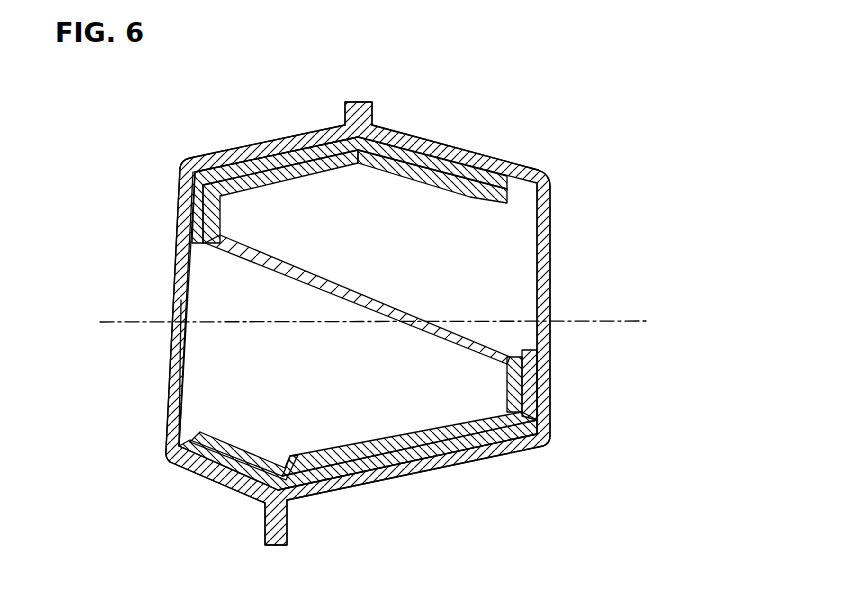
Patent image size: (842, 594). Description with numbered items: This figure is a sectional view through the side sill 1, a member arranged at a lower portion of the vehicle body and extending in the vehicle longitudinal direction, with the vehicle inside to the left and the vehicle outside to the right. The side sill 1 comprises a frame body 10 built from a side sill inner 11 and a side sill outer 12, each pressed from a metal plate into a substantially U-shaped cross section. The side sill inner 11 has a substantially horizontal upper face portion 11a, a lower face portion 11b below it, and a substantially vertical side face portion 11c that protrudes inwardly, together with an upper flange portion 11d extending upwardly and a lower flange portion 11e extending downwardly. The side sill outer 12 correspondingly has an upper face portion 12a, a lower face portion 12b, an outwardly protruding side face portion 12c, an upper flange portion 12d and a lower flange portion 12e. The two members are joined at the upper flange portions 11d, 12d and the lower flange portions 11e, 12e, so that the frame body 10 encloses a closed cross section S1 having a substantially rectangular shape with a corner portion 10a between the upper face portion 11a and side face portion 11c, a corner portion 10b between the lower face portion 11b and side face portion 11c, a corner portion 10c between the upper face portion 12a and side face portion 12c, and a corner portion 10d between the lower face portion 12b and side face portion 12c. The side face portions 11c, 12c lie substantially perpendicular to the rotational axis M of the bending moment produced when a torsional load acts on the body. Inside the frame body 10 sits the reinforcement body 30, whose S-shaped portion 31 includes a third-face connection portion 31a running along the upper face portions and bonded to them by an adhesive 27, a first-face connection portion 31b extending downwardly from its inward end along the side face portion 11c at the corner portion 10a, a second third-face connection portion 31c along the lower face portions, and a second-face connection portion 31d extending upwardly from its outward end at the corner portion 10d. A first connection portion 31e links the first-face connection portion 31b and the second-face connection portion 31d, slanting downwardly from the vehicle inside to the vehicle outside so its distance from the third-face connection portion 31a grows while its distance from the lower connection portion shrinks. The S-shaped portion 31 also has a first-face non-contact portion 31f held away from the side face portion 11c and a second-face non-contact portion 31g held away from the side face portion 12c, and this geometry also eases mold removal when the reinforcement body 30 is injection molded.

The side sill 1 is at (525, 60).
The frame body 10 is at (520, 140).
The corner portion 10a is at (178, 175).
The corner portion 10b is at (167, 463).
The corner portion 10c is at (549, 172).
The corner portion 10d is at (553, 447).
The side sill inner 11 is at (166, 230).
The upper face portion 11a is at (205, 158).
The lower face portion 11b is at (213, 483).
The side face portion 11c is at (168, 410).
The upper flange portion 11d is at (343, 113).
The lower flange portion 11e is at (264, 523).
The side sill outer 12 is at (568, 389).
The upper face portion 12a is at (408, 131).
The lower face portion 12b is at (360, 488).
The side face portion 12c is at (545, 356).
The upper flange portion 12d is at (377, 114).
The lower flange portion 12e is at (290, 522).
The adhesive 27 is at (260, 163).
The reinforcement body 30 is at (228, 430).
The S-shaped portion 31 is at (540, 200).
The third-face connection portion 31a is at (462, 197).
The first-face connection portion 31b is at (222, 217).
The second third-face connection portion 31c is at (322, 444).
The second-face connection portion 31d is at (518, 386).
The first connection portion 31e is at (337, 278).
The first-face non-contact portion 31f is at (192, 300).
The second-face non-contact portion 31g is at (520, 280).
The rotational axis M is at (383, 321).
The closed cross section S1 is at (136, 382).